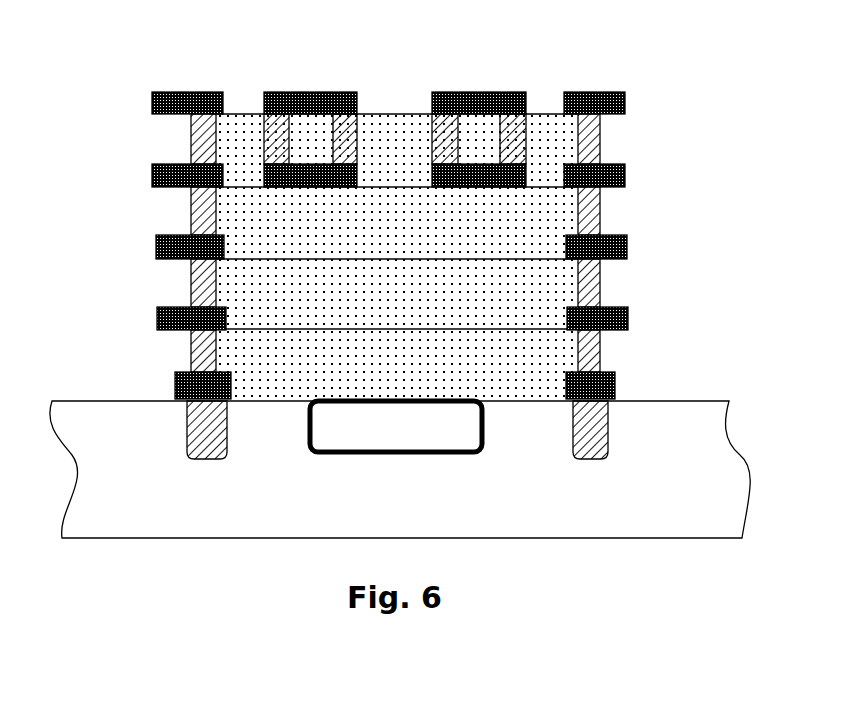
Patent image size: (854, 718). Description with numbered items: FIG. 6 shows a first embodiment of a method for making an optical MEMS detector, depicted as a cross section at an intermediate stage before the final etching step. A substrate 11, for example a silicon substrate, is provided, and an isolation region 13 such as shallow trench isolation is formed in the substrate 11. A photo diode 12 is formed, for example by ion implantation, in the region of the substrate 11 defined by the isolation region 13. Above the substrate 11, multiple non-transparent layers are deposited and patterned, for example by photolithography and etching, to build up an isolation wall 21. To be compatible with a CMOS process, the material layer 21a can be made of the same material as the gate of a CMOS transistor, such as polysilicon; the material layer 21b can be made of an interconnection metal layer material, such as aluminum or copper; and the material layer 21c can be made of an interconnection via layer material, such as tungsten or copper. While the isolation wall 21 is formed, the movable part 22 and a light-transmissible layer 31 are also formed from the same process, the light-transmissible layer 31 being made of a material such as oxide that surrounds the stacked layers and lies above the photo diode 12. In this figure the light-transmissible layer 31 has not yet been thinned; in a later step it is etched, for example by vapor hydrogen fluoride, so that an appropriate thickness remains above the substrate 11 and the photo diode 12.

The substrate 11 is at (281, 511).
The photo diode 12 is at (407, 440).
The isolation region 13 is at (592, 424).
The isolation wall 21 is at (400, 205).
The material layer 21a is at (175, 392).
The material layer 21b is at (156, 247).
The material layer 21c is at (191, 146).
The movable part 22 is at (533, 77).
The light-transmissible layer 31 is at (255, 285).